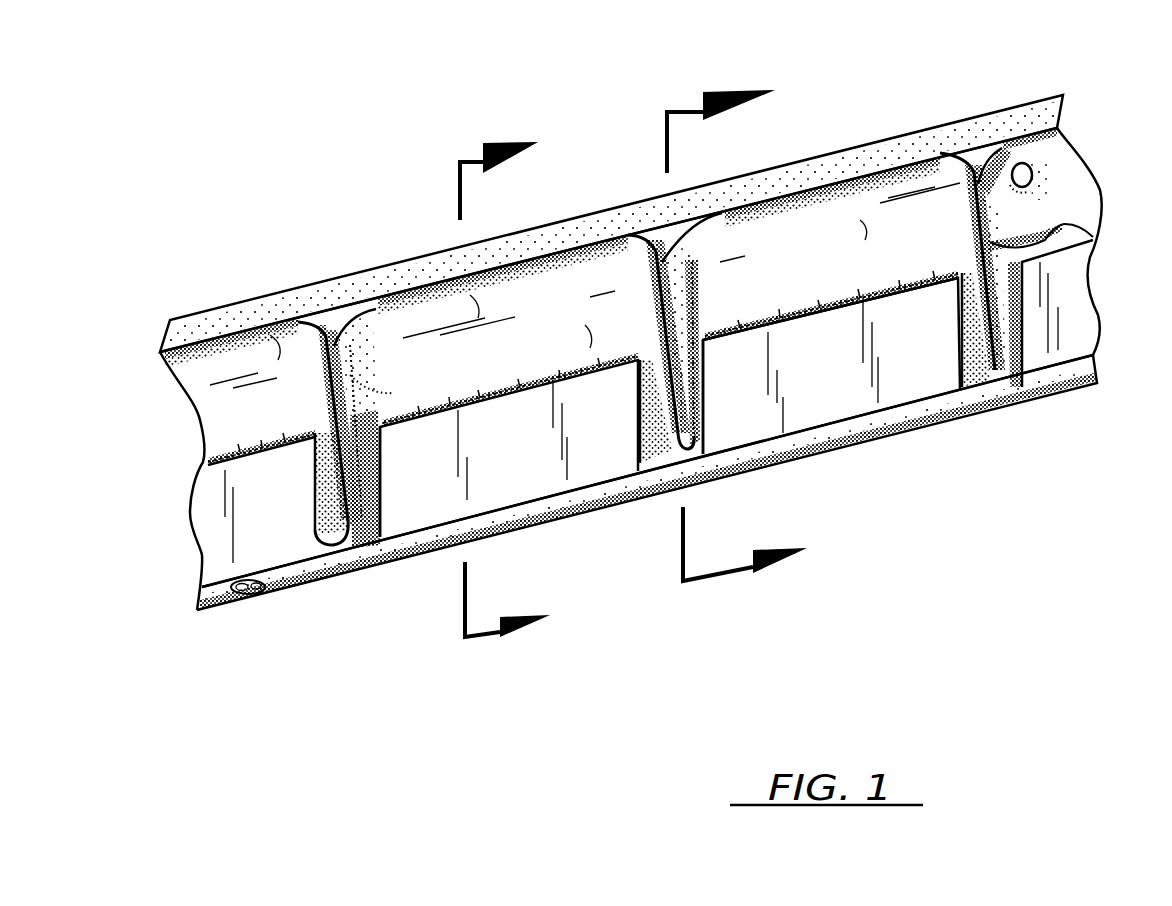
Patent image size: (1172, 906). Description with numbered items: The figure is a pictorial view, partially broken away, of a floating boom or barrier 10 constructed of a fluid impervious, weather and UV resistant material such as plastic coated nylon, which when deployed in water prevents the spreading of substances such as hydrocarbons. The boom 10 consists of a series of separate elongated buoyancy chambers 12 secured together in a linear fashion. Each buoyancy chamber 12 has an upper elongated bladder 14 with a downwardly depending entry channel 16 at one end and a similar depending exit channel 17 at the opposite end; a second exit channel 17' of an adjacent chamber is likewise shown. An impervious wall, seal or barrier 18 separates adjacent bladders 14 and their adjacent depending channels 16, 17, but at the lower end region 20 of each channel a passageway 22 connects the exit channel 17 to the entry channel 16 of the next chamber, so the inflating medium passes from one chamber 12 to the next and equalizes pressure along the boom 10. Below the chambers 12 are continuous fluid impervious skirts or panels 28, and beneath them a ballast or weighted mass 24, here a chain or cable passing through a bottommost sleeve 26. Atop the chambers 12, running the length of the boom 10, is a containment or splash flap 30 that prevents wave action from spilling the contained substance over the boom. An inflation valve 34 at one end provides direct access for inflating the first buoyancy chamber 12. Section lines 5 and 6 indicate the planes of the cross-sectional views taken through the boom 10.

The section line 5- 5 is at (480, 403).
The section line 6- 6 is at (718, 341).
The floating boom or barrier 10 is at (170, 489).
The buoyancy chamber 12 is at (437, 377).
The elongated bladder 14 is at (797, 316).
The entry channel 16 is at (316, 492).
The exit channel 17 is at (409, 481).
The panel side edge 17' is at (732, 397).
The impervious wall, seal or barrier 18 is at (657, 336).
The lower end region 20 is at (383, 517).
The passageway 22 is at (316, 550).
The ballast or weighted mass 24 is at (245, 598).
The bottommost sleeve 26 is at (318, 590).
The skirt or panel 28 is at (530, 462).
The containment or splash flap 30 is at (1012, 103).
The inflation valve 34 is at (1032, 172).